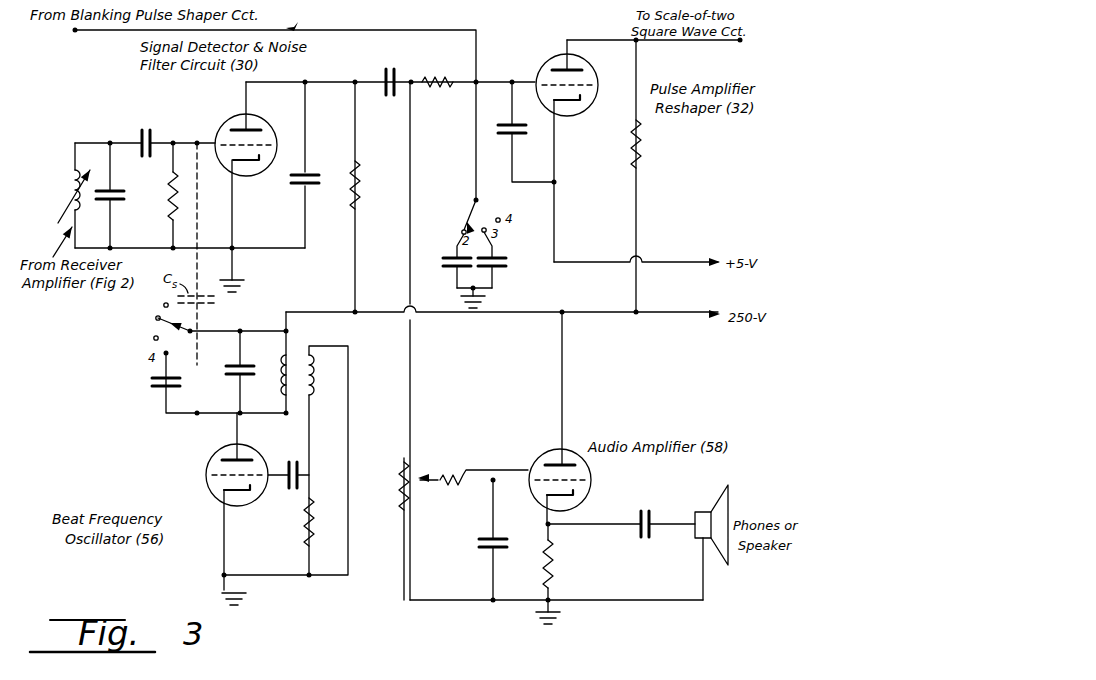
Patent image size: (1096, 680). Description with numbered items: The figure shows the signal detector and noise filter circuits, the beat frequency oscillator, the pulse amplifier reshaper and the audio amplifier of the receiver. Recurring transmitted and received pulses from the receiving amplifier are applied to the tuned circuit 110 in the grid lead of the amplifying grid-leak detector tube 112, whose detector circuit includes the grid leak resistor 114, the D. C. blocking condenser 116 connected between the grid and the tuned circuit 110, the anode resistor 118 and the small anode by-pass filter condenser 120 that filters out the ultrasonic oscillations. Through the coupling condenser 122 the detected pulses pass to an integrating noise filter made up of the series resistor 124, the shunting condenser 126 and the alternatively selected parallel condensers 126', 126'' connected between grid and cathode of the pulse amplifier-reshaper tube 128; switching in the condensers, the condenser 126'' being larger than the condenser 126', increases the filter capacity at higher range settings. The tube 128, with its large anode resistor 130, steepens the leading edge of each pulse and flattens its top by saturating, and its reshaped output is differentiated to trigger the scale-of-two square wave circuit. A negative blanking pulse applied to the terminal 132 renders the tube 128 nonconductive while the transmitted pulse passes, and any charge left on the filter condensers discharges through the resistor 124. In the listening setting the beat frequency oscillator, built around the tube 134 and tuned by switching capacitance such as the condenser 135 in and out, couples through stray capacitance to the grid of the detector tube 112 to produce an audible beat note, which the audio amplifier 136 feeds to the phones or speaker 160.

The tuned circuit 110 is at (98, 140).
The amplifying grid-leak detector tube 112 is at (256, 120).
The grid leak resistor 114 is at (178, 212).
The D. C. blocking condenser 116 is at (152, 142).
The anode resistor 118 is at (362, 176).
The anode by-pass filter condenser 120 is at (301, 188).
The coupling condenser 122 is at (396, 78).
The series resistor 124 is at (454, 96).
The shunting condenser 126 is at (516, 132).
The parallel condenser 126' is at (441, 261).
The parallel condenser 126'' is at (511, 260).
The pulse amplifier-reshaper tube 128 is at (588, 72).
The anode resistor 130 is at (643, 154).
The terminal 132 is at (75, 32).
The beat frequency oscillator tube 134 is at (205, 462).
The oscillator tuning capacitor 135 is at (152, 391).
The audio amplifier 136 is at (534, 457).
The phones or loudspeaker 160 is at (702, 510).